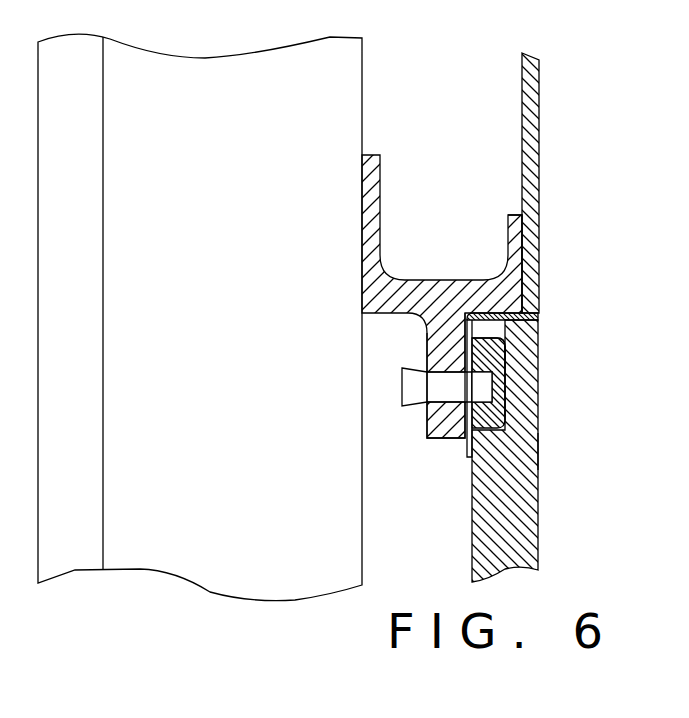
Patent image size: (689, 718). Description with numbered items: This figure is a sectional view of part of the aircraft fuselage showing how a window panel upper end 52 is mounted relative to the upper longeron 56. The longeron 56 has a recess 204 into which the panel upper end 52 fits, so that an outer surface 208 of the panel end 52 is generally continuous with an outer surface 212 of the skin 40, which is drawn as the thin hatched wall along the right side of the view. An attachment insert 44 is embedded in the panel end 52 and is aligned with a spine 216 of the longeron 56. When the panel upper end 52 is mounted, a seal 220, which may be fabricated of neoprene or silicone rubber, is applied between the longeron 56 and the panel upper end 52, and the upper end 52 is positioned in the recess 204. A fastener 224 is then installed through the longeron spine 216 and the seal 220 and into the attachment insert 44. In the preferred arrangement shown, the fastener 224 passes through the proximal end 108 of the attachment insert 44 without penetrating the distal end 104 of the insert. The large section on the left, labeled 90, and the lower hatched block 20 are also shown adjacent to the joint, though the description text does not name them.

The housing body 90 is at (263, 242).
The upper longeron 56 is at (413, 278).
The spine 216 is at (427, 422).
The outer surface 212 is at (540, 292).
The skin 40 is at (539, 155).
The fastener 224 is at (402, 387).
The proximal end 108 is at (427, 341).
The outer surface 208 is at (540, 333).
The seal 220 is at (463, 442).
The distal end 104 is at (507, 386).
The recess 204 is at (540, 350).
The frame member 20 is at (538, 497).
The window panel upper end 52 is at (507, 424).
The attachment insert 44 is at (540, 450).